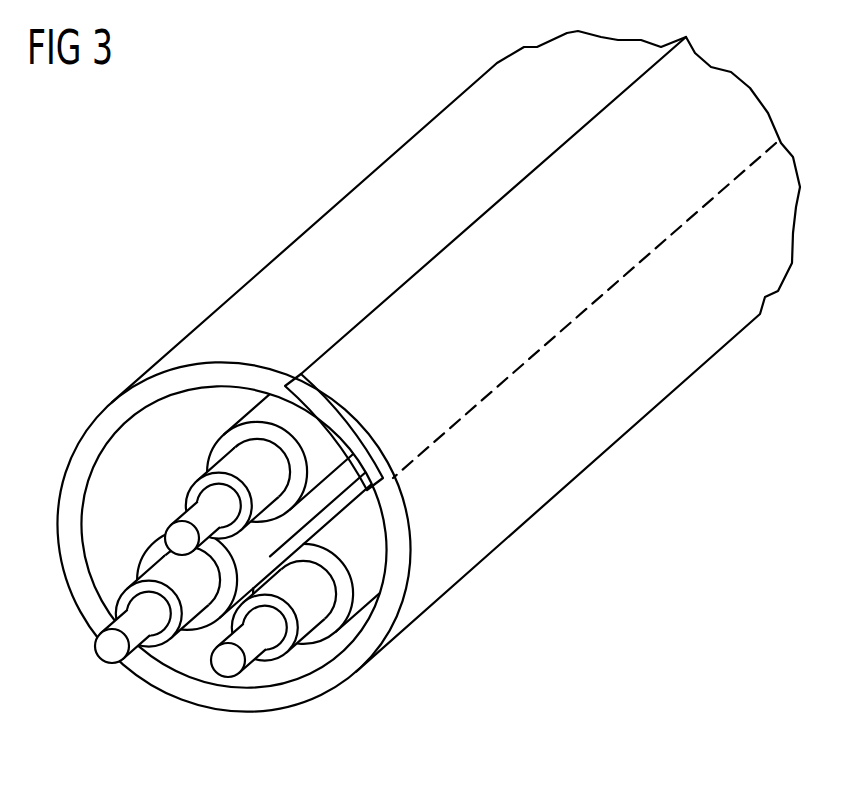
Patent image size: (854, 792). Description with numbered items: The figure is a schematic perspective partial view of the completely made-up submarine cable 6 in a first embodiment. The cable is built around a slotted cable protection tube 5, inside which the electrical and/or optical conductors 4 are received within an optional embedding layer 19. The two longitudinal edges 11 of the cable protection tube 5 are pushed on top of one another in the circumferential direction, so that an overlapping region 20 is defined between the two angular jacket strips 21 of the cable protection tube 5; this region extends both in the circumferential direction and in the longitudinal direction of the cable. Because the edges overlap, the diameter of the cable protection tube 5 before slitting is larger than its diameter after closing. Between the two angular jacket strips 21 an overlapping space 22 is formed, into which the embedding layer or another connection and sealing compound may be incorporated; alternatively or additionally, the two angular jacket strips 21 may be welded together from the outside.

The electrical and/or optical conductors 4 is at (236, 461).
The slotted cable protection tube 5 is at (600, 432).
The submarine cable 6 is at (293, 178).
The longitudinal edges 11 is at (418, 272).
The embedding layer 19 is at (132, 451).
The overlapping region 20 is at (345, 356).
The angular jacket strips 21 is at (342, 447).
The overlapping space 22 is at (316, 401).